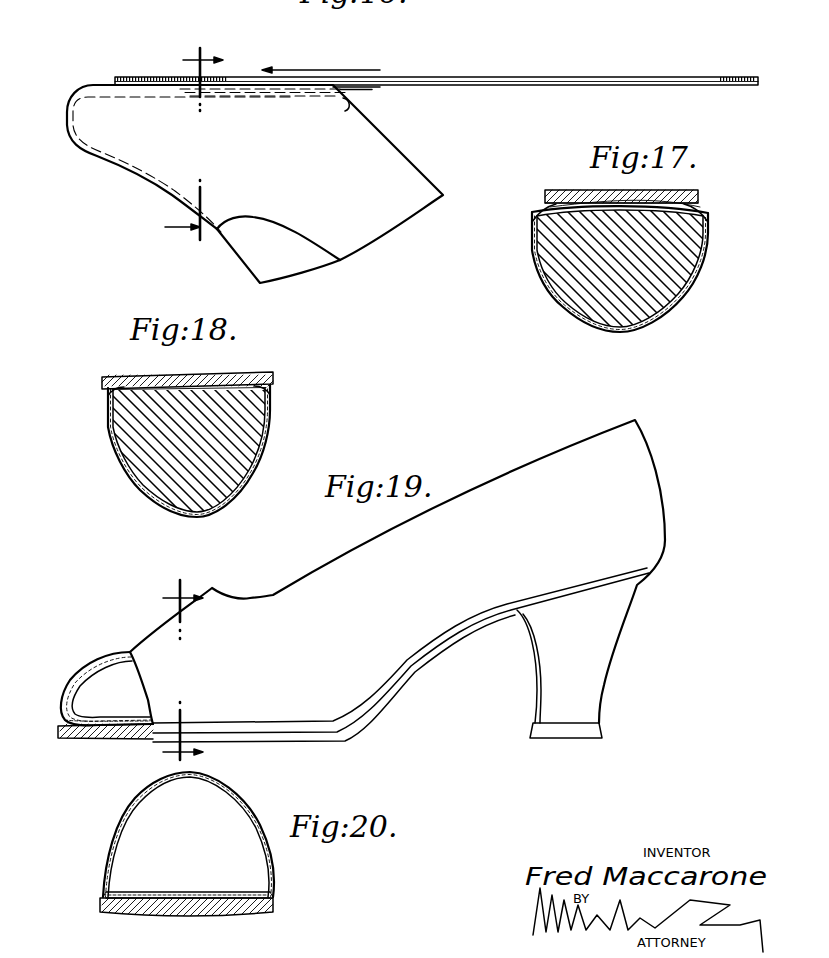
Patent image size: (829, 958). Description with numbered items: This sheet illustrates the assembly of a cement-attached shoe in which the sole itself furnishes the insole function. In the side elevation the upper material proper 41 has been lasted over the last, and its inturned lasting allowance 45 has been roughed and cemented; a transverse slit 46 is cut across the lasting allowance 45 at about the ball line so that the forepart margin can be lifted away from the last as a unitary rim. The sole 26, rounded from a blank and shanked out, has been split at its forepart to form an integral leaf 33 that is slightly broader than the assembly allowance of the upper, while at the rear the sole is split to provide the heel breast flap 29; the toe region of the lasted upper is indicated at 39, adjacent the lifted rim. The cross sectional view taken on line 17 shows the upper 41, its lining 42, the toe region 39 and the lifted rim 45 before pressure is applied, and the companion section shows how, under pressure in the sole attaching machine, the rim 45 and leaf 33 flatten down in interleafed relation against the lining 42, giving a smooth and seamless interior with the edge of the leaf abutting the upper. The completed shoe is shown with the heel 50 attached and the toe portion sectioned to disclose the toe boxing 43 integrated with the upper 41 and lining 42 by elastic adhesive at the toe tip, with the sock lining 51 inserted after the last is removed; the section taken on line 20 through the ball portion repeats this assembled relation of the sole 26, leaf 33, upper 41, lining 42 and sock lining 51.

In FIG. 16, the section line 17— 17 is at (213, 44).
In FIG. 19, the section line 20— 20 is at (170, 670).
In FIG. 16, the sole 26 is at (476, 84).
In FIG. 17, the sole 26 is at (599, 204).
In FIG. 18, the sole 26 is at (184, 378).
In FIG. 19, the sole 26 is at (247, 742).
In FIG. 20, the sole 26 is at (173, 917).
In FIG. 16, the heel breast flap 29 is at (642, 84).
In FIG. 19, the heel breast flap 29 is at (535, 682).
In FIG. 16, the leaf 33 is at (367, 89).
In FIG. 17, the leaf 33 is at (568, 196).
In FIG. 18, the leaf 33 is at (112, 395).
In FIG. 20, the leaf 33 is at (106, 895).
In FIG. 16, the toe cap / toe piece 39 is at (278, 239).
In FIG. 17, the toe cap / toe piece 39 is at (607, 297).
In FIG. 18, the toe cap / toe piece 39 is at (173, 478).
In FIG. 16, the upper material proper 41 is at (255, 184).
In FIG. 17, the upper material proper 41 is at (542, 272).
In FIG. 18, the upper material proper 41 is at (117, 453).
In FIG. 19, the upper material proper 41 is at (306, 659).
In FIG. 20, the upper material proper 41 is at (124, 798).
In FIG. 17, the lining 42 is at (562, 286).
In FIG. 18, the lining 42 is at (130, 461).
In FIG. 19, the lining 42 is at (104, 664).
In FIG. 20, the lining 42 is at (131, 800).
In FIG. 19, the toe boxing 43 is at (64, 688).
In FIG. 16, the lasting allowance 45 is at (95, 86).
In FIG. 17, the lasting allowance 45 is at (545, 208).
In FIG. 18, the lasting allowance 45 is at (122, 380).
In FIG. 16, the transverse slit 46 is at (347, 109).
In FIG. 19, the heel 50 is at (582, 687).
In FIG. 19, the sock lining 51 is at (120, 723).
In FIG. 20, the sock lining 51 is at (157, 897).